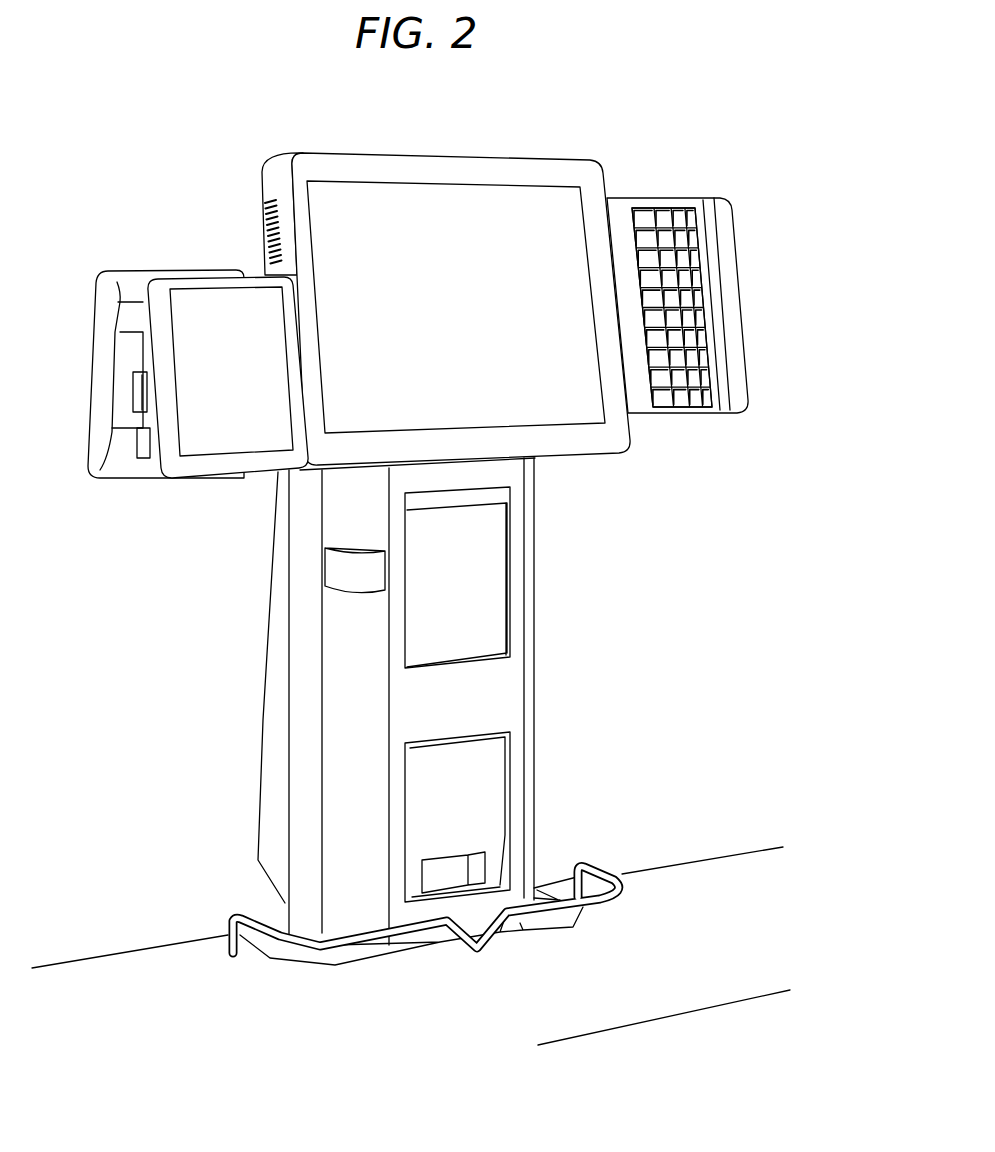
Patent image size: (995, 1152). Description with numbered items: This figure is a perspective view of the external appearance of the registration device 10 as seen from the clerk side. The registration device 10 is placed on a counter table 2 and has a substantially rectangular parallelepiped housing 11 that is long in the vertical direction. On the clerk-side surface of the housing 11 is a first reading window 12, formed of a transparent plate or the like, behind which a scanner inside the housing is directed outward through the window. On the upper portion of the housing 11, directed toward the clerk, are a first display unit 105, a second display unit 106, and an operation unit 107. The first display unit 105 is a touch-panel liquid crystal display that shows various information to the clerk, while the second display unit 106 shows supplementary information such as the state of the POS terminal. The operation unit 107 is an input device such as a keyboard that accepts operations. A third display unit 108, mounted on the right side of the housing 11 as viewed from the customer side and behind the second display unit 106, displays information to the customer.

The counter table 2 is at (670, 883).
The registration device 10 is at (418, 513).
The housing 11 is at (348, 793).
The first reading window 12 is at (472, 583).
The first display unit 105 is at (397, 207).
The second display unit 106 is at (218, 305).
The operation unit 107 is at (663, 238).
The third display unit 108 is at (120, 283).